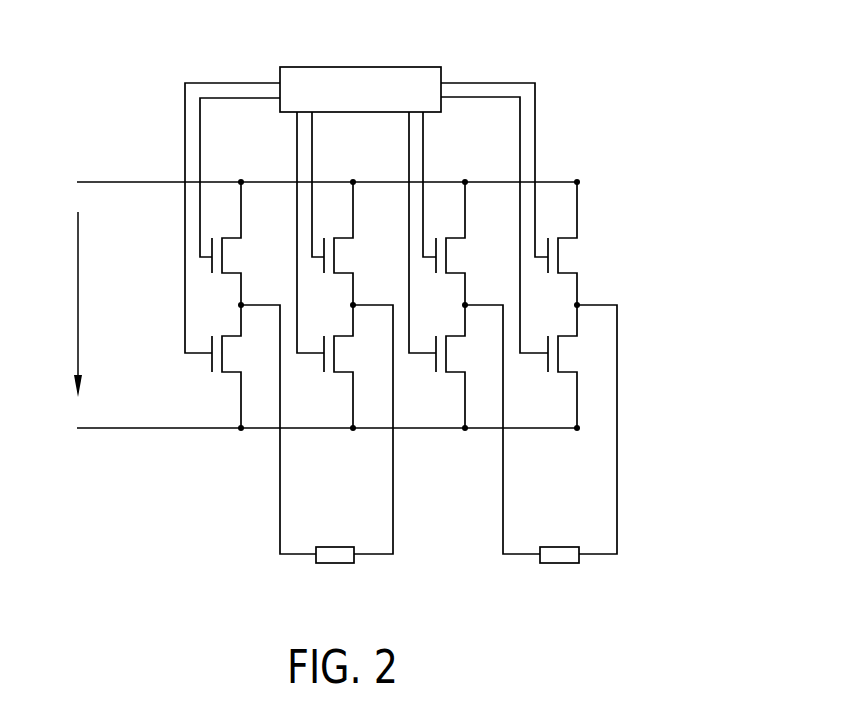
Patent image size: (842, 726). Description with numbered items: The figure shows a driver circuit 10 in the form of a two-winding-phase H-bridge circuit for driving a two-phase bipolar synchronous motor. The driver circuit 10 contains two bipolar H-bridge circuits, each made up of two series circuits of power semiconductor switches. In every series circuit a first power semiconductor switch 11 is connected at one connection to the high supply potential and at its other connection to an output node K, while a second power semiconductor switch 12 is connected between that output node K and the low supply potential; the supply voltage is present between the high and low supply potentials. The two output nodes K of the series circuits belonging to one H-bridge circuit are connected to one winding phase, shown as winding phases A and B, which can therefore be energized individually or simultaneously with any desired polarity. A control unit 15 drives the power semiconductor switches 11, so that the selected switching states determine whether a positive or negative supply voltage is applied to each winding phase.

The driver circuit 10 is at (624, 210).
The first power semiconductor switch 11 is at (230, 237).
The second power semiconductor switch 12 is at (232, 375).
The control unit 15 is at (417, 67).